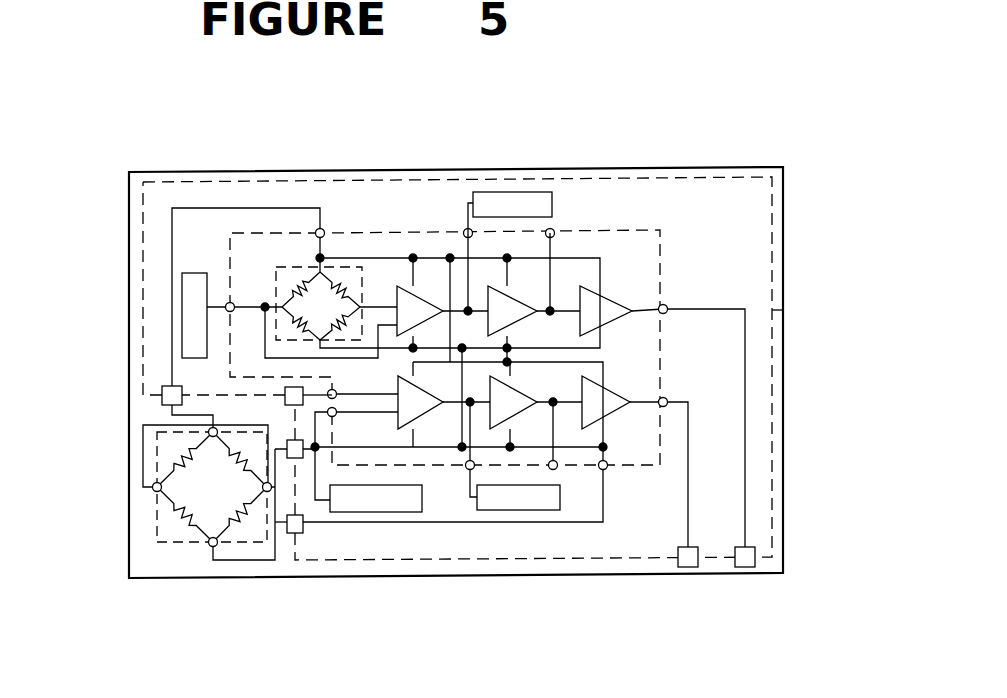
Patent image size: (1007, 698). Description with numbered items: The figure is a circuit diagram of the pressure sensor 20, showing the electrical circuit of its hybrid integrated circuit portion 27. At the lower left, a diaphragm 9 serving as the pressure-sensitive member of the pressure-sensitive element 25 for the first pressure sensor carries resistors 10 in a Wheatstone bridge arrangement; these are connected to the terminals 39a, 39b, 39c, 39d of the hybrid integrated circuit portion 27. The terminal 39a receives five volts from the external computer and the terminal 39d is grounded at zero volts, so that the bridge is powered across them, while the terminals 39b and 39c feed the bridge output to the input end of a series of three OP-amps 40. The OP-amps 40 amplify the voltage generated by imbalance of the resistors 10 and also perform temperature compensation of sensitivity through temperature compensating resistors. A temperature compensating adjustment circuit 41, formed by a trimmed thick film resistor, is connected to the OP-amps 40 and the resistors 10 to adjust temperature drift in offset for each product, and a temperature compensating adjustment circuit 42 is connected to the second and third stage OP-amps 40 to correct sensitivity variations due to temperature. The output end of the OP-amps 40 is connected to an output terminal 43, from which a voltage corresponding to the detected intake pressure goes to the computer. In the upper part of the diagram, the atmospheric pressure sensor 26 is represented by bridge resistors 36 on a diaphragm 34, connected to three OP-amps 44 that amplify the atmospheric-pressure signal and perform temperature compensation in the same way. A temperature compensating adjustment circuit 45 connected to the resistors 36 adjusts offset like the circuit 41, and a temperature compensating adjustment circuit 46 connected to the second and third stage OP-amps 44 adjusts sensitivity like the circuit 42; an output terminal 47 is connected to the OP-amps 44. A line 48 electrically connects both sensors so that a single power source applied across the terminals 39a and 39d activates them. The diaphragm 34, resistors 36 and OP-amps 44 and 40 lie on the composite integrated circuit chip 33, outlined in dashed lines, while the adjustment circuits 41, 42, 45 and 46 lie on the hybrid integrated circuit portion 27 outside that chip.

The diaphragm 9 is at (157, 520).
The resistors 10 is at (197, 505).
The pressure sensor 20 is at (790, 222).
The pressure-sensitive element 25 is at (148, 504).
The atmospheric pressure sensor 26 is at (275, 267).
The hybrid integrated circuit portion 27 is at (783, 310).
The composite integrated circuit chip 33 is at (643, 229).
The diaphragm 34 is at (293, 267).
The bridge resistors 36 is at (280, 297).
The terminal 39a is at (163, 403).
The terminal 39b is at (274, 394).
The terminal 39c is at (287, 458).
The terminal 39d is at (293, 533).
The OP-amps 40 is at (455, 430).
The temperature compensating adjustment circuit 41 is at (377, 512).
The temperature compensating adjustment circuit 42 is at (527, 510).
The output terminal 43 is at (688, 567).
The OP-amps 44 is at (398, 287).
The temperature compensating adjustment circuit 45 is at (192, 315).
The temperature compensating adjustment circuit 46 is at (505, 192).
The output terminal 47 is at (745, 567).
The line 48 is at (450, 277).